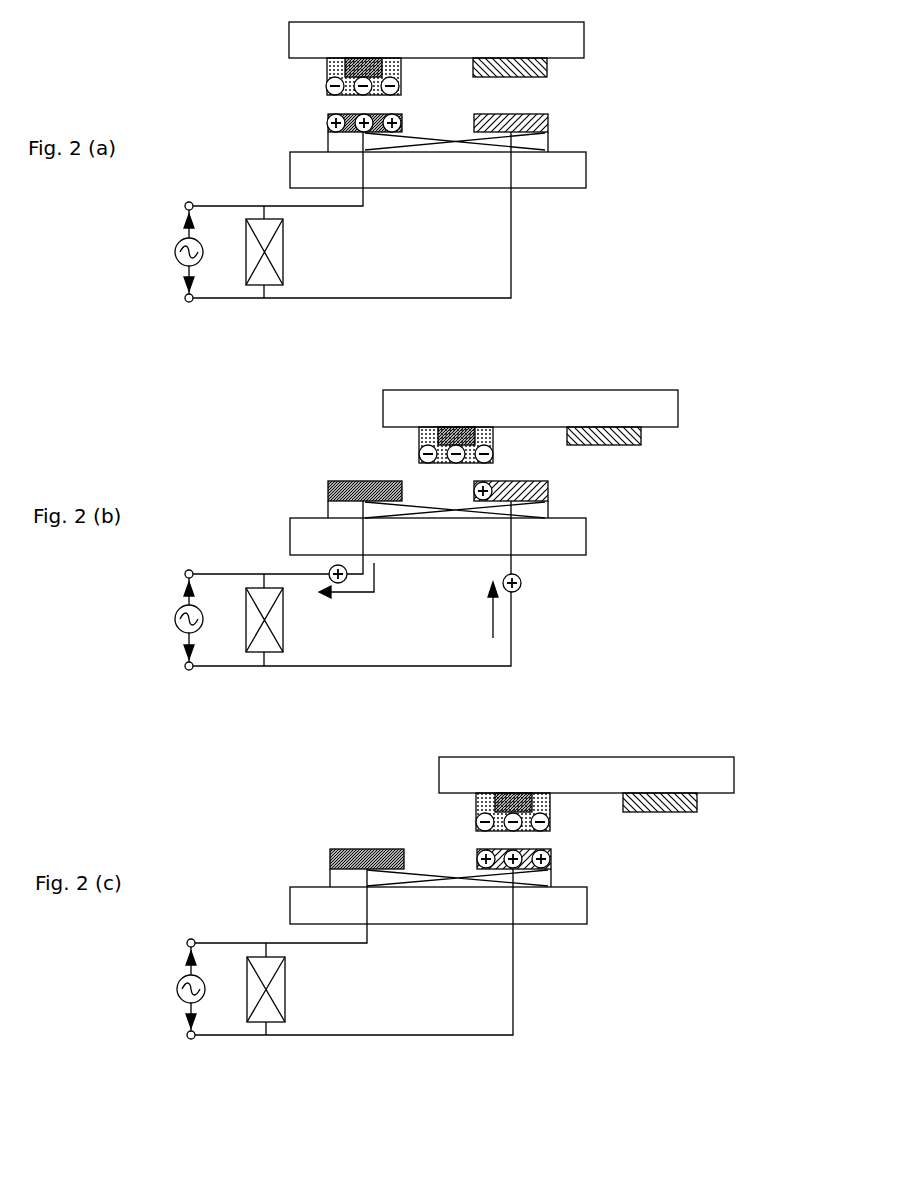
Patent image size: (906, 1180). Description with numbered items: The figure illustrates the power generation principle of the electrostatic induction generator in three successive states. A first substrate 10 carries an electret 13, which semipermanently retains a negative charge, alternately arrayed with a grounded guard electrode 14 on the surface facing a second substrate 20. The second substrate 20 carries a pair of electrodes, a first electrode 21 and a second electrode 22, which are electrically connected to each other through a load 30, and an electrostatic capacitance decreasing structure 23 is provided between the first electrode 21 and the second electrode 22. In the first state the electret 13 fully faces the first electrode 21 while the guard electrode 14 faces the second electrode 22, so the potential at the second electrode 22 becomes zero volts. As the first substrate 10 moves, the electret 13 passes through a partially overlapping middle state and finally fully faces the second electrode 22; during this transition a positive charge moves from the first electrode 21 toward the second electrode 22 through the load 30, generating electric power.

In FIG. 2A, the first substrate 10 is at (575, 40).
In FIG. 2B, the first substrate 10 is at (668, 408).
In FIG. 2C, the first substrate 10 is at (725, 775).
In FIG. 2A, the electret 13 is at (326, 70).
In FIG. 2B, the electret 13 is at (419, 440).
In FIG. 2C, the electret 13 is at (476, 808).
In FIG. 2A, the guard electrode 14 is at (528, 72).
In FIG. 2B, the guard electrode 14 is at (622, 440).
In FIG. 2C, the guard electrode 14 is at (680, 810).
In FIG. 2A, the second substrate 20 is at (567, 170).
In FIG. 2B, the second substrate 20 is at (568, 537).
In FIG. 2C, the second substrate 20 is at (577, 905).
In FIG. 2A, the first electrode 21 is at (326, 122).
In FIG. 2B, the first electrode 21 is at (328, 490).
In FIG. 2C, the first electrode 21 is at (330, 859).
In FIG. 2A, the second electrode 22 is at (548, 122).
In FIG. 2B, the second electrode 22 is at (549, 490).
In FIG. 2C, the second electrode 22 is at (551, 857).
In FIG. 2A, the electrostatic capacitance decreasing structure 23 is at (472, 142).
In FIG. 2B, the electrostatic capacitance decreasing structure 23 is at (485, 505).
In FIG. 2C, the electrostatic capacitance decreasing structure 23 is at (500, 880).
In FIG. 2A, the load 30 is at (272, 250).
In FIG. 2B, the load 30 is at (273, 620).
In FIG. 2C, the load 30 is at (273, 988).